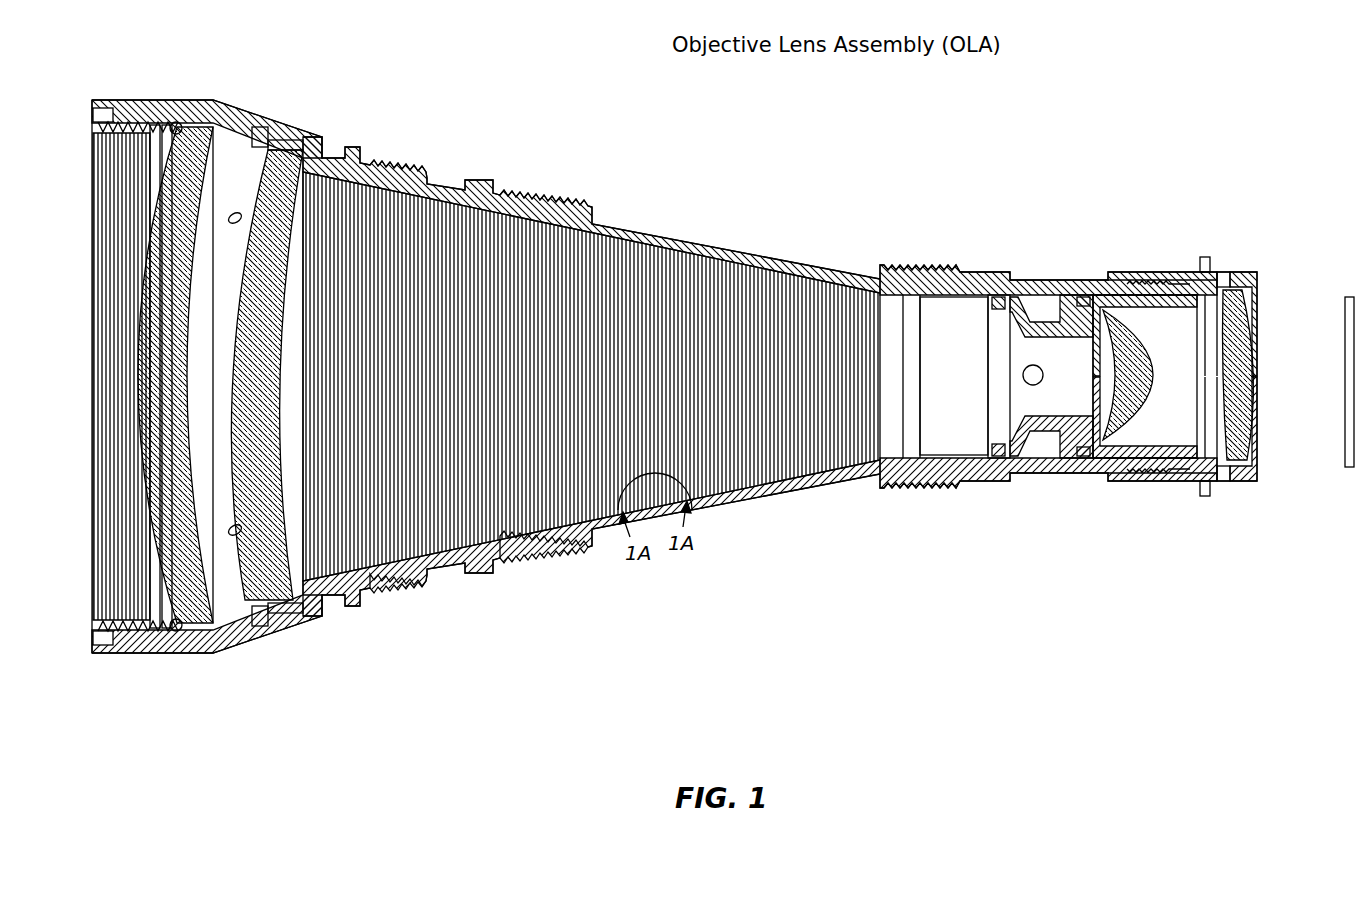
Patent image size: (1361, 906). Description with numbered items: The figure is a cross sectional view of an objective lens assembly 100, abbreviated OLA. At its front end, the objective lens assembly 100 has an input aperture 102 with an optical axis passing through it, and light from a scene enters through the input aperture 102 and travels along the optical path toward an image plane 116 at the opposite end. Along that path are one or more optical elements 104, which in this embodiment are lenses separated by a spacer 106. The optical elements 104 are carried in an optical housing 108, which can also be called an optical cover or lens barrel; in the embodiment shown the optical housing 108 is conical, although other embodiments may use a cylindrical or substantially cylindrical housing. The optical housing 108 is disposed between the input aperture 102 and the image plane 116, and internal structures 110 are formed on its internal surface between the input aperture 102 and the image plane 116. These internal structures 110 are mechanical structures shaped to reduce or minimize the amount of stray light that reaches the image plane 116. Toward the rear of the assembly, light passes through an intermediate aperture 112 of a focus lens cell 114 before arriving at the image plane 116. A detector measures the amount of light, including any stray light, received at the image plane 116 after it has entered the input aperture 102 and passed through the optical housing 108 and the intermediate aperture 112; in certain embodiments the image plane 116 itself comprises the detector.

The objective lens assembly 100 is at (458, 68).
The input aperture 102 is at (92, 368).
The optical elements 104 is at (272, 592).
The spacer 106 is at (238, 165).
The optical housing 108 is at (538, 190).
The internal structures 110 is at (573, 500).
The intermediate aperture 112 is at (1040, 357).
The focus lens cell 114 is at (1057, 425).
The image plane 116 is at (1342, 392).